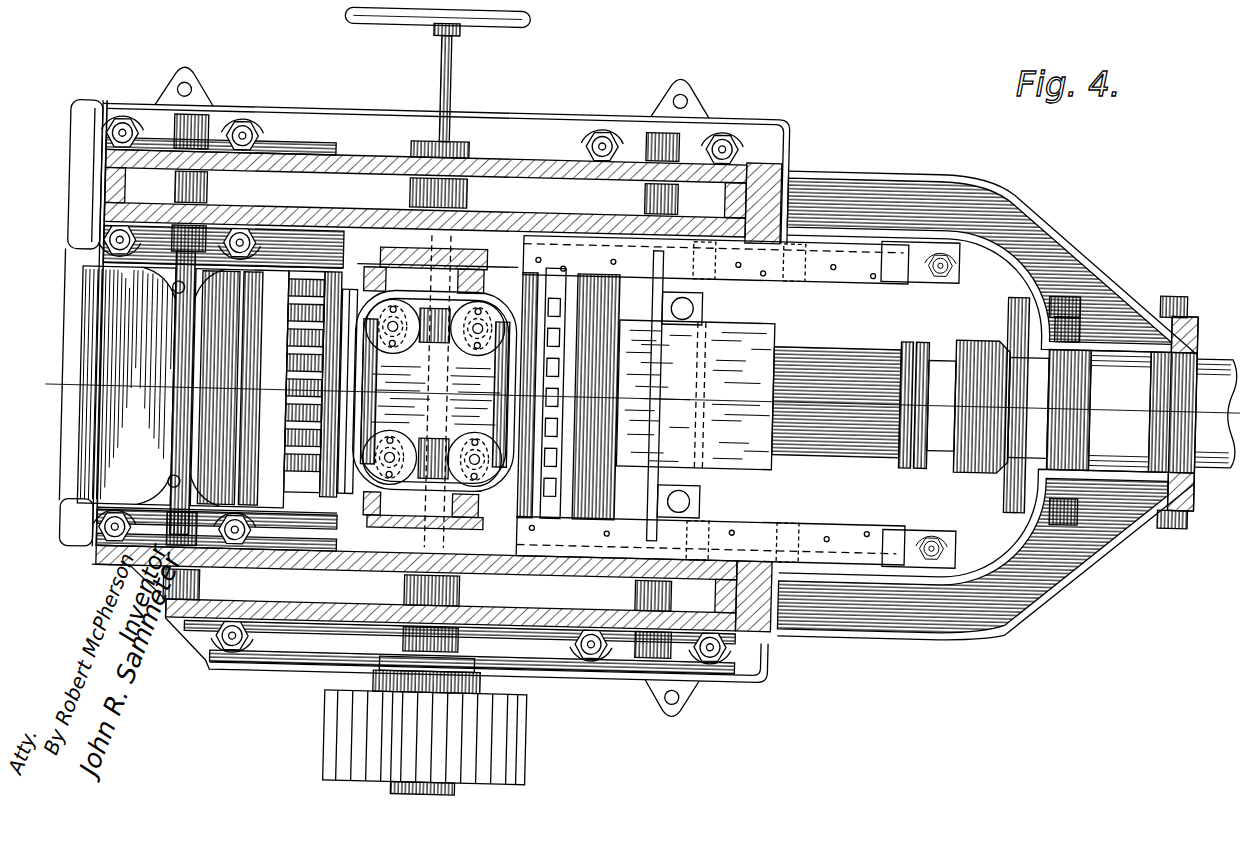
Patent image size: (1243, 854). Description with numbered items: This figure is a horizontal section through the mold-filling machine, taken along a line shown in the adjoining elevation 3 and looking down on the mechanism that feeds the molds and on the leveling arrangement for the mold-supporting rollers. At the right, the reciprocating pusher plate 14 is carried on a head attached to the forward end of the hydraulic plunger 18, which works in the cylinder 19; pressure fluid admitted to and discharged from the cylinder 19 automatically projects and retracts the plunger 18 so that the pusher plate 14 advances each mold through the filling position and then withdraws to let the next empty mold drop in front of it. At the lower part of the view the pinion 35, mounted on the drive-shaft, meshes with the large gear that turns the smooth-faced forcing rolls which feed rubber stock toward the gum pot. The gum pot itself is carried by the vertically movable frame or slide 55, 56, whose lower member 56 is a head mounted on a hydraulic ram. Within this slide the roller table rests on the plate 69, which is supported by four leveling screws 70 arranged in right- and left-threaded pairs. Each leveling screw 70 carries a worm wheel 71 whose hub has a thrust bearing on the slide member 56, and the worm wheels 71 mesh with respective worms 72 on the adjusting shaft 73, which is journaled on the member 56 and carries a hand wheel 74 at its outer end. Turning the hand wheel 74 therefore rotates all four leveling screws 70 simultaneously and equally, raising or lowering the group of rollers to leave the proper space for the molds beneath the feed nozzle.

The section line 3- 3 is at (49, 378).
The reciprocating pusher plate 14 is at (740, 360).
The hydraulic plunger 18 is at (855, 377).
The cylinder 19 is at (997, 345).
The pinion 35 is at (531, 739).
The vertically-movable frame or slide 55 is at (511, 245).
The slide member 56 is at (344, 430).
The plate 69 is at (487, 380).
The leveling screws 70 is at (389, 327).
The worm wheels 71 is at (370, 312).
The worms 72 is at (468, 245).
The adjusting shaft 73 is at (445, 84).
The hand wheel 74 is at (527, 28).